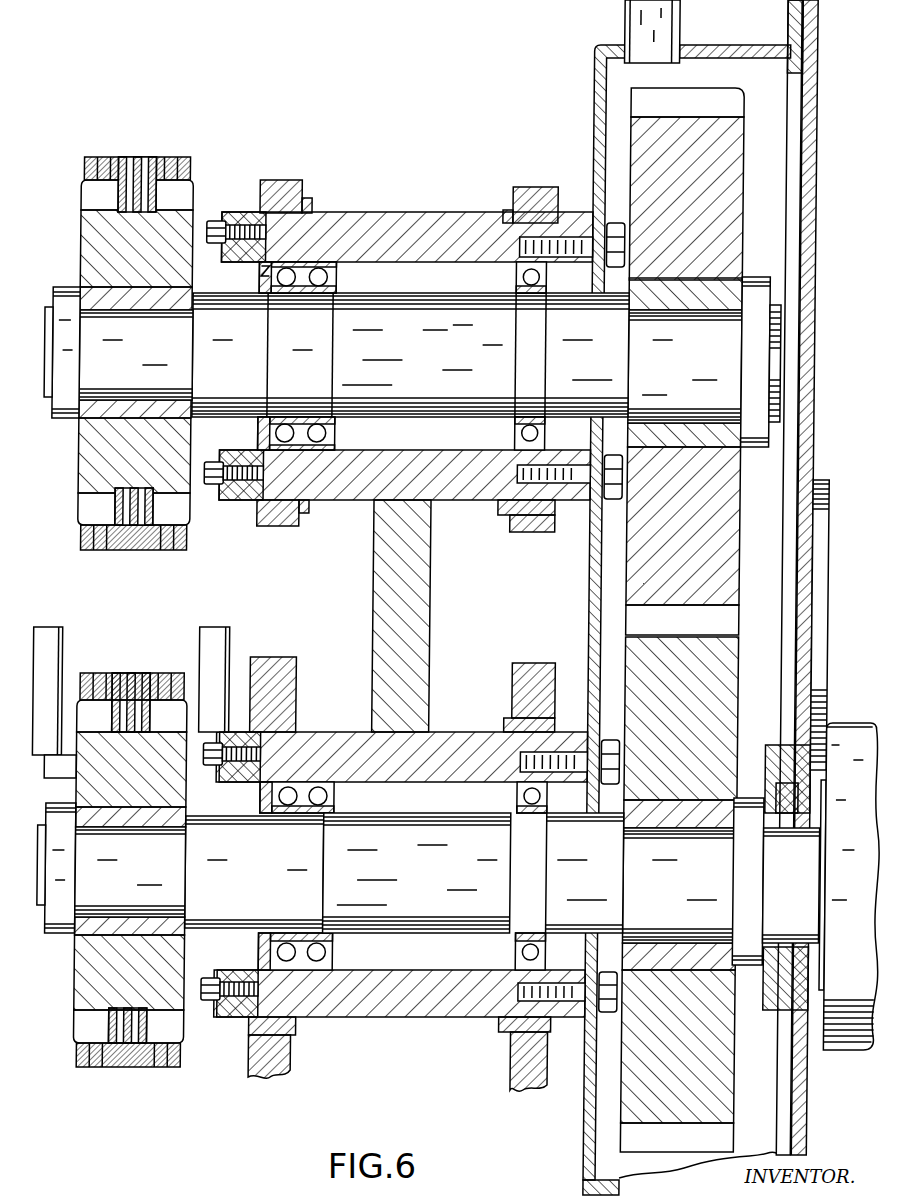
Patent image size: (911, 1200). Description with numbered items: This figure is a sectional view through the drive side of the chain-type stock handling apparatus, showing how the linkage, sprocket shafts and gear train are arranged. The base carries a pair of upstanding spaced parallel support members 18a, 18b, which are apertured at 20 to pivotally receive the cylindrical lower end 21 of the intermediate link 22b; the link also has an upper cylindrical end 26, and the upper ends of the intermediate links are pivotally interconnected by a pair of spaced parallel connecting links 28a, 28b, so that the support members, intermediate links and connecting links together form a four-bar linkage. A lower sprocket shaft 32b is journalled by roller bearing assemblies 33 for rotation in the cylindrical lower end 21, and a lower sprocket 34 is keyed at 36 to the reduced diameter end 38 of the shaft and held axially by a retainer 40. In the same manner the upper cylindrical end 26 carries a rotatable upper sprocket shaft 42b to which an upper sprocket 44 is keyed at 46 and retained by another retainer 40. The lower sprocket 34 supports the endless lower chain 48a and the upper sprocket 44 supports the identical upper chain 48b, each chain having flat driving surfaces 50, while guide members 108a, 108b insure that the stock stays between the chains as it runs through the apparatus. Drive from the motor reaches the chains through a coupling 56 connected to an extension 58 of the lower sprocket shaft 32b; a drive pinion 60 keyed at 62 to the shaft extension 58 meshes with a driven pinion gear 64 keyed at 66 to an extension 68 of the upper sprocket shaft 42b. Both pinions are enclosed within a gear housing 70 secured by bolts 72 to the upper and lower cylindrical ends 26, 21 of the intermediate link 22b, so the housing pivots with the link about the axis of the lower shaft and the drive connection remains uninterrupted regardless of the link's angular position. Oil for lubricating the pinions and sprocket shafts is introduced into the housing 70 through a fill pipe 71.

The support member 18a is at (260, 1060).
The support member 18b is at (532, 1080).
The aperture 20 is at (294, 1038).
The cylindrical lower end 21 is at (399, 1000).
The intermediate link 22b is at (368, 567).
The upper cylindrical end 26 is at (399, 214).
The connecting link 28a is at (283, 182).
The connecting link 28b is at (531, 186).
The sprocket shaft 32b is at (420, 934).
The roller bearing assembly 33 is at (334, 288).
The lower sprocket 34 is at (80, 996).
The key 36 is at (130, 824).
The reduced diameter end 38 is at (110, 905).
The retainer 40 is at (63, 415).
The upper sprocket shaft 42b is at (432, 420).
The upper sprocket 44 is at (90, 228).
The key 46 is at (130, 306).
The chain 48a is at (136, 678).
The chain 48b is at (172, 550).
The flat driving surface 50 is at (122, 550).
The coupling 56 is at (851, 735).
The shaft extension 58 is at (670, 928).
The drive pinion 60 is at (696, 1137).
The key 62 is at (676, 817).
The driven pinion gear 64 is at (728, 162).
The key 66 is at (673, 298).
The shaft extension 68 is at (686, 412).
The gear housing 70 is at (590, 1155).
The fill pipe 71 is at (672, 27).
The bolt 72 is at (621, 243).
The guide member 108a is at (50, 658).
The guide member 108b is at (222, 656).